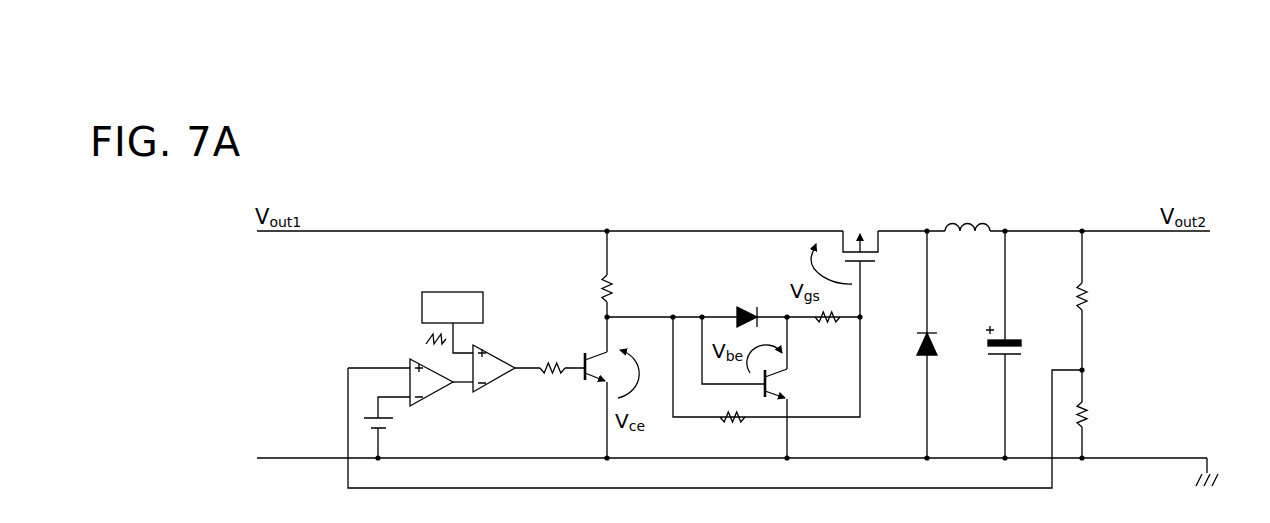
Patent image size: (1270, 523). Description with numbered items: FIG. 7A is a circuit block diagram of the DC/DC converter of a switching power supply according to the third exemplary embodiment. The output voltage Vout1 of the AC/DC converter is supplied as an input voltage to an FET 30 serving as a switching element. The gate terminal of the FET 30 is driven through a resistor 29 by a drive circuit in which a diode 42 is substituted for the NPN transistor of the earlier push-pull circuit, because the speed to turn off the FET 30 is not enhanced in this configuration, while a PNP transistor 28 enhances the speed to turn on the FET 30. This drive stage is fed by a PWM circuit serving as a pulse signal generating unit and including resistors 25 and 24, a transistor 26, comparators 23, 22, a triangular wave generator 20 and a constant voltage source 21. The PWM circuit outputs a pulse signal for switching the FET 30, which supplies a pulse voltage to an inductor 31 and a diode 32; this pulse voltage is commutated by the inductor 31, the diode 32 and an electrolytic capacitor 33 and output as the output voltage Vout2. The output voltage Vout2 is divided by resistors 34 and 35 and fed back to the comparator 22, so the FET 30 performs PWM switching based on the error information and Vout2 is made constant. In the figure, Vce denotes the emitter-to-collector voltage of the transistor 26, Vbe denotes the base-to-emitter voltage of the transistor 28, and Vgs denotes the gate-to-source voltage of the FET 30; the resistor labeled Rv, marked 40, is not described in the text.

The triangular wave generator 20 is at (432, 292).
The constant voltage source 21 is at (396, 430).
The comparator 22 is at (440, 392).
The comparator 23 is at (503, 378).
The resistor 24 is at (557, 375).
The resistor 25 is at (603, 284).
The transistor 26 is at (583, 356).
The PNP transistor 28 is at (790, 391).
The resistor 29 is at (833, 322).
The FET 30 is at (874, 263).
The inductor 31 is at (968, 236).
The diode 32 is at (930, 350).
The electrolytic capacitor 33 is at (1008, 338).
The resistor 34 is at (1086, 281).
The resistor 35 is at (1086, 400).
The resistor Rv 40 is at (743, 421).
The diode 42 is at (738, 309).